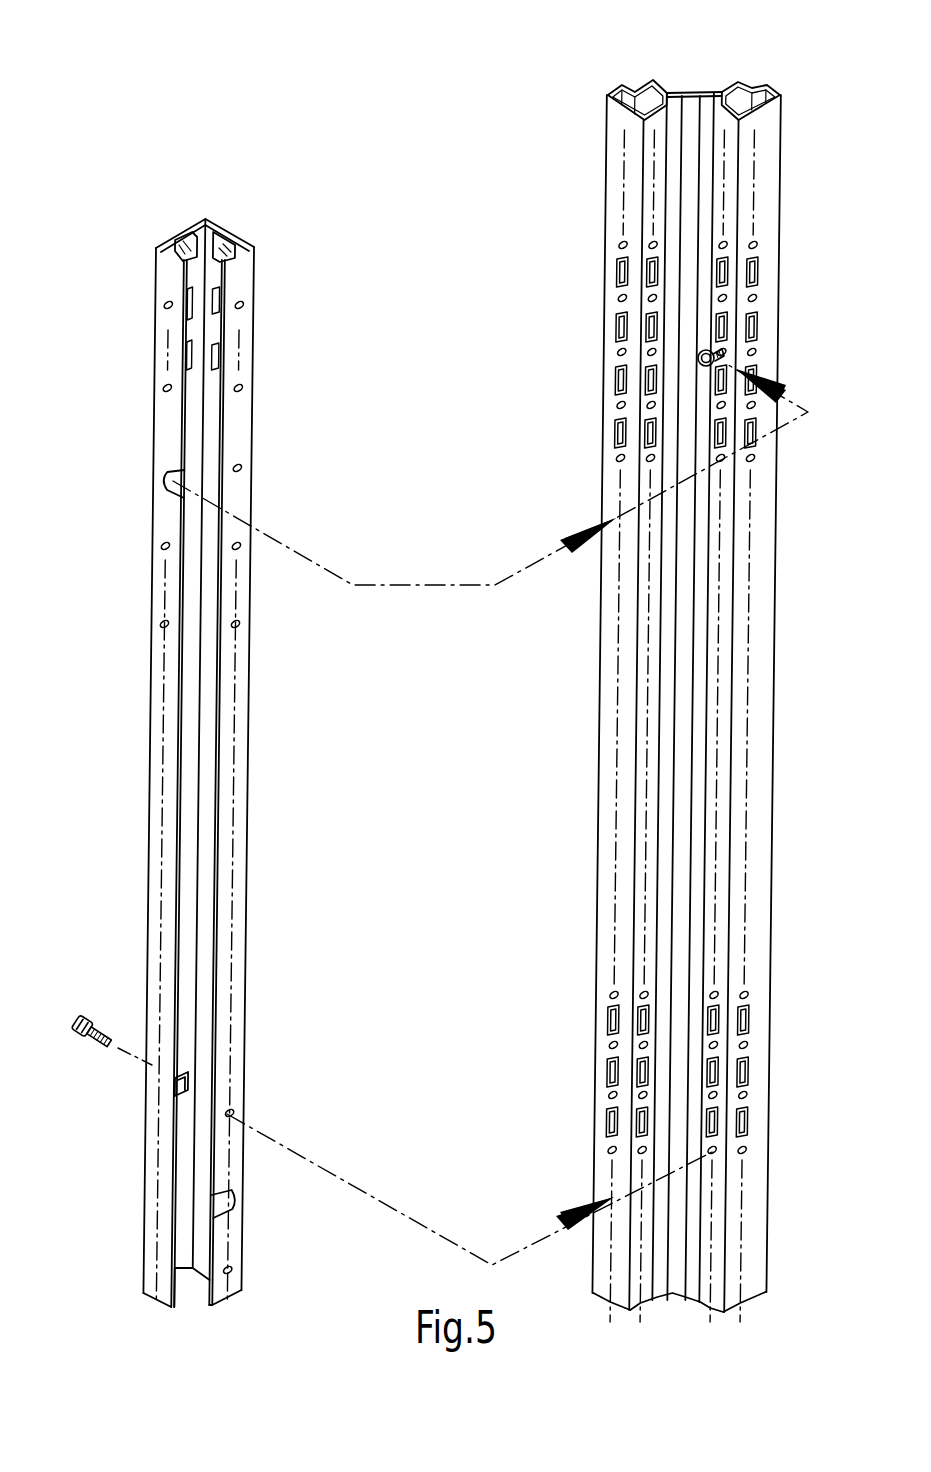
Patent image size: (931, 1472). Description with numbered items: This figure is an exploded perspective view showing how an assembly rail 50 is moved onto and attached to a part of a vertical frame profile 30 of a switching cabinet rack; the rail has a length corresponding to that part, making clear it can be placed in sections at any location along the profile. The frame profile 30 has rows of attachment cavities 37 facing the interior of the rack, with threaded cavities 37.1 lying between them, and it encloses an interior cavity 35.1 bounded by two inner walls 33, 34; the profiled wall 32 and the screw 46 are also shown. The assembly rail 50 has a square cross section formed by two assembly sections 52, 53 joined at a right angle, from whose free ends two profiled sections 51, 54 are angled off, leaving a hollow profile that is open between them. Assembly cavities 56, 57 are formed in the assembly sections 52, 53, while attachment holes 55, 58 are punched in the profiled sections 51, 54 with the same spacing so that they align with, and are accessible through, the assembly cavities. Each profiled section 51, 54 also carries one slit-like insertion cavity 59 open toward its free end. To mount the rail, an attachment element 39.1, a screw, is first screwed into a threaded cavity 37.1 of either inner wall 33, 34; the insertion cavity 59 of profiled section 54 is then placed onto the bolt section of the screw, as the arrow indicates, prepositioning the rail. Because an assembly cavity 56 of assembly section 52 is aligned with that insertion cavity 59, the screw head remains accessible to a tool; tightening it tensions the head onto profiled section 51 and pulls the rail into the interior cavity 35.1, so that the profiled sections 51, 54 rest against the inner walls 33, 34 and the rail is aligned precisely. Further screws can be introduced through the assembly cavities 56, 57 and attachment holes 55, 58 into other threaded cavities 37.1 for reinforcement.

The vertical frame profile 30 is at (582, 767).
The profile wall of upright 32 is at (621, 186).
The inner wall 33 is at (628, 135).
The inner wall 34 is at (722, 129).
The interior cavity 35.1 is at (689, 72).
The attachment cavities 37 is at (722, 270).
The threaded cavities 37.1 is at (742, 245).
The attachment element 39.1 is at (727, 355).
The screw 46 is at (83, 1016).
The assembly rail 50 is at (272, 828).
The profiled section 51 is at (238, 265).
The assembly section 52 is at (222, 238).
The assembly section 53 is at (192, 232).
The profiled section 54 is at (165, 280).
The attachment holes 55 is at (245, 388).
The assembly cavities 56 is at (232, 242).
The assembly cavities 57 is at (167, 245).
The attachment holes 58 is at (167, 309).
The insertion cavities 59 is at (160, 481).